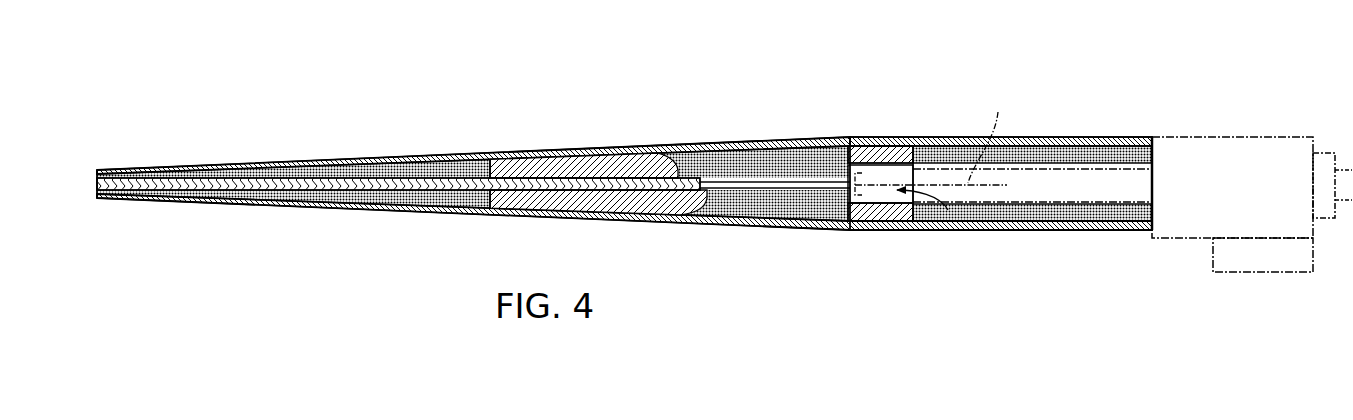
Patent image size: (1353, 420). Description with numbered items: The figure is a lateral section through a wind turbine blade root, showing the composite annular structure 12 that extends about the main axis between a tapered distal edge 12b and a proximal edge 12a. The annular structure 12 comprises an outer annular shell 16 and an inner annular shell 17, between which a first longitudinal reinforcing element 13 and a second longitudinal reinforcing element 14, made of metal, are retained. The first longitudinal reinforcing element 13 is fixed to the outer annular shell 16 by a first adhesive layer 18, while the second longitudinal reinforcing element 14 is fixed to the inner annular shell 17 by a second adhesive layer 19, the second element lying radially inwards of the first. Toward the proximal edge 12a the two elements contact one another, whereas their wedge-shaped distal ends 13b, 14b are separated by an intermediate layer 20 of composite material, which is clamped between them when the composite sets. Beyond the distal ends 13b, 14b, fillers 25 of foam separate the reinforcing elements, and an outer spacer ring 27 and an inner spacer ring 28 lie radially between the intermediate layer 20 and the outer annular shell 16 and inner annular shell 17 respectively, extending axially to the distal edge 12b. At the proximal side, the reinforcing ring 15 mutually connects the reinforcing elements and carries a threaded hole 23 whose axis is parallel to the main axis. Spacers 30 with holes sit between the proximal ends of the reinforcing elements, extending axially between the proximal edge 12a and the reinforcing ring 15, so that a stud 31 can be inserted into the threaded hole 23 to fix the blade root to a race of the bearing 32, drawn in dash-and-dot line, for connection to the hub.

The annular structure 12 is at (228, 224).
The proximal edge 12a is at (1160, 178).
The distal edge 12b is at (89, 168).
The first longitudinal reinforcing element 13 is at (580, 155).
The distal end of first longitudinal reinforcing element 13b is at (515, 152).
The second longitudinal reinforcing element 14 is at (588, 220).
The distal end of second longitudinal reinforcing element 14b is at (512, 213).
The reinforcing ring 15 is at (887, 155).
The outer annular shell 16 is at (947, 140).
The inner annular shell 17 is at (940, 205).
The first adhesive layer 18 is at (1120, 140).
The second adhesive layer 19 is at (730, 228).
The intermediate layer 20 is at (345, 191).
The threaded hole 23 is at (948, 215).
The filler 25 is at (747, 157).
The outer spacer ring 27 is at (373, 160).
The inner spacer ring 28 is at (392, 205).
The spacer 30 is at (1062, 155).
The stud 31 is at (1040, 205).
The bearing 32 is at (1270, 172).